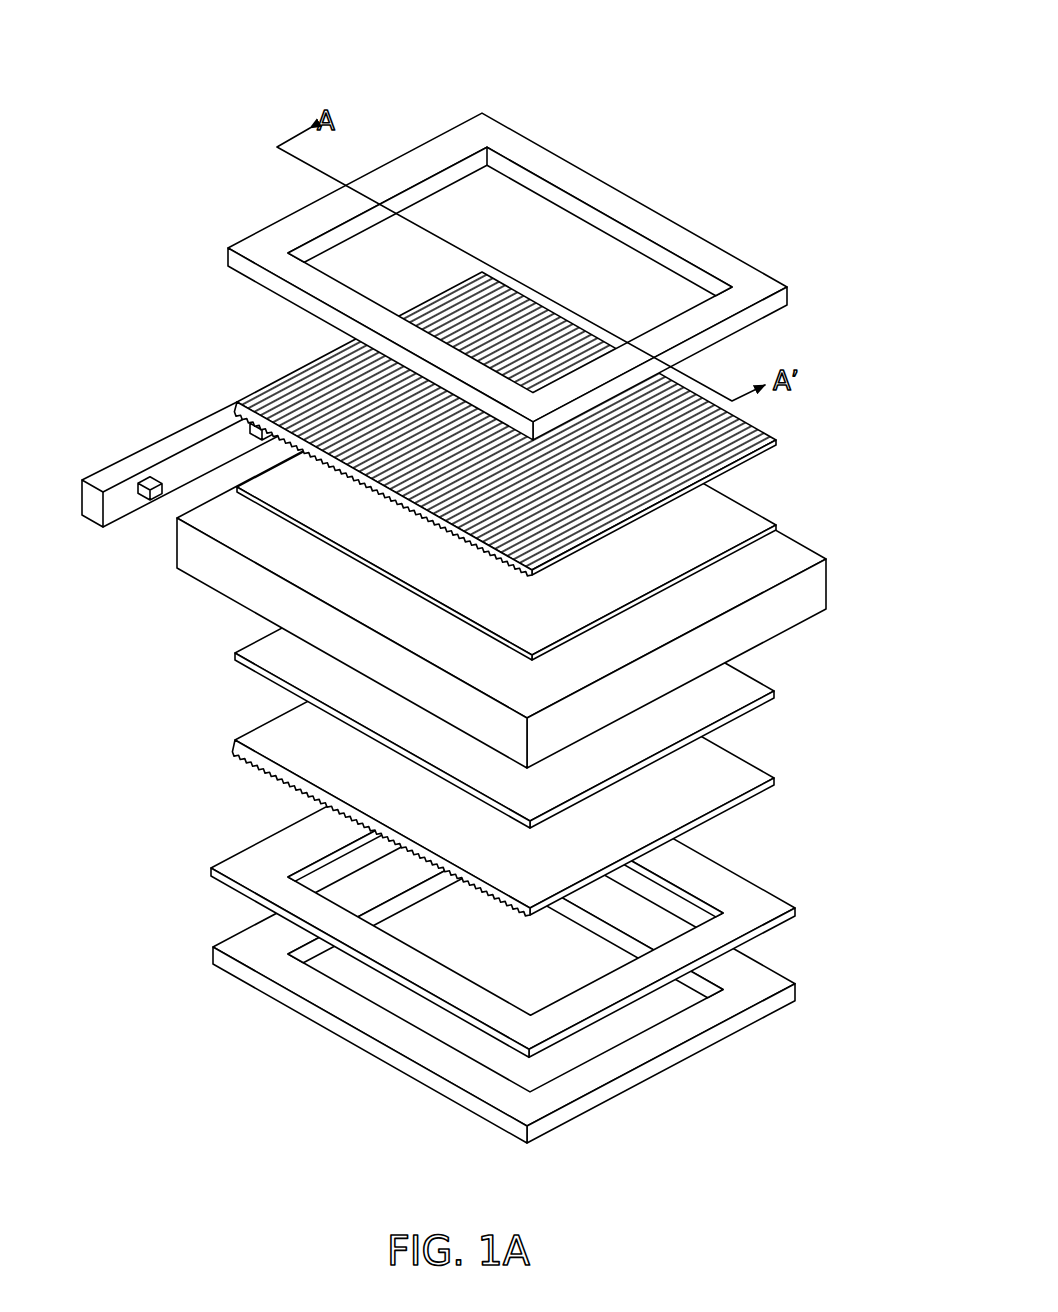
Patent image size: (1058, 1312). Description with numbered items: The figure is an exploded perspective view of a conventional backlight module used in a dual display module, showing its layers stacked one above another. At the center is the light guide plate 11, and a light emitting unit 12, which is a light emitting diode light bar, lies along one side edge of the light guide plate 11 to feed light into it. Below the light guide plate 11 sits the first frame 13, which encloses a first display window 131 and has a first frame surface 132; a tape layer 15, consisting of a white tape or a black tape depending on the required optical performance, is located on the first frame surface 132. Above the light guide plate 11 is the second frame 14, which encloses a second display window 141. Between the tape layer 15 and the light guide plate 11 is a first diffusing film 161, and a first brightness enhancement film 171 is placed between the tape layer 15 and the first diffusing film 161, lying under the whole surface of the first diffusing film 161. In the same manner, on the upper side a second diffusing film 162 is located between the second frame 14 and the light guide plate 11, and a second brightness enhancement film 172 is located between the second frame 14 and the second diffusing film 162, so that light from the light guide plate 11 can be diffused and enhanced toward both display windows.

The light guide plate 11 is at (803, 598).
The light emitting unit 12 is at (114, 514).
The first frame 13 is at (780, 1002).
The first display window 131 is at (652, 1013).
The first frame surface 132 is at (582, 1079).
The second frame 14 is at (780, 302).
The second display window 141 is at (670, 277).
The tape layer 15 is at (780, 922).
The first diffusing film 161 is at (776, 692).
The second diffusing film 162 is at (776, 527).
The first brightness enhancement film 171 is at (776, 780).
The second brightness enhancement film 172 is at (776, 440).